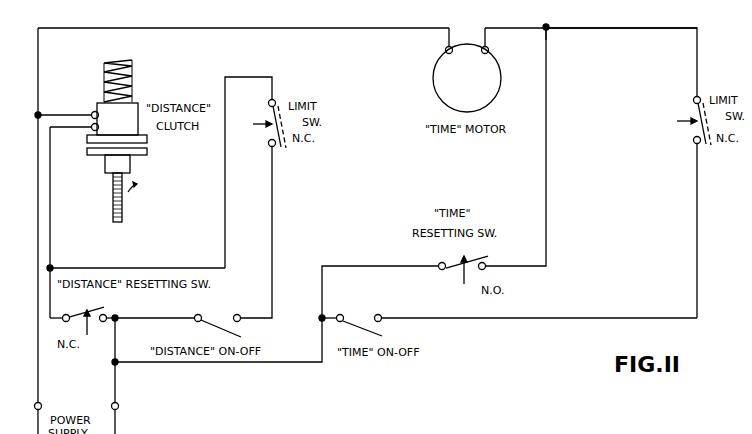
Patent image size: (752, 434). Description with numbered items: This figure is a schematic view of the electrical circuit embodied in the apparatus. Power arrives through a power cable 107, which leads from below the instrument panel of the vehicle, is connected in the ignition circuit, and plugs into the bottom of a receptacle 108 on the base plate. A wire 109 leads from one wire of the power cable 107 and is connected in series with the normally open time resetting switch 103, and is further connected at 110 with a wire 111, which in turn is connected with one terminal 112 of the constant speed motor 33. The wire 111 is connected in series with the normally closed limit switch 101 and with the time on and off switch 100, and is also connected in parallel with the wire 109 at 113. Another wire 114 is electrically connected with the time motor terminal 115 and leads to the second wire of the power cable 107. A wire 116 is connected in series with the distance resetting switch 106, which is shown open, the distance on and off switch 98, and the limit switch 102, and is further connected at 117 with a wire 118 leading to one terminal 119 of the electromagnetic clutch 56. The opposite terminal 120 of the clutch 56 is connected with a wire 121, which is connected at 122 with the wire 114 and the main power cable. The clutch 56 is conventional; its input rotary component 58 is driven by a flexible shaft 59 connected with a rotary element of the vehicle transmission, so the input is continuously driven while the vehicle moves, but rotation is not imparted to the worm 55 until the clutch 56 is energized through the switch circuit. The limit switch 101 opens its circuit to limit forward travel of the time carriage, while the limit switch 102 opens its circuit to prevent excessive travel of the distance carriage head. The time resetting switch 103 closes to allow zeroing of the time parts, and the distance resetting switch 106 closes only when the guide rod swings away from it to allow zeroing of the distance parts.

The constant speed electric motor 33 is at (434, 82).
The worm 55 is at (102, 82).
The electromagnetic clutch 56 is at (130, 125).
The input rotary component 58 is at (140, 152).
The flexible shaft 59 is at (124, 209).
The distance on and off switch 98 is at (220, 323).
The time on and off switch 100 is at (362, 326).
The limit switch 101 is at (694, 131).
The limit switch 102 is at (270, 135).
The time resetting switch 103 is at (460, 262).
The distance resetting switch 106 is at (62, 316).
The power cable 107 is at (113, 385).
The receptacle 108 is at (119, 405).
The wire 109 is at (230, 364).
The connection 110 is at (548, 30).
The wire 111 is at (610, 30).
The motor terminal 112 is at (489, 50).
The connection 113 is at (320, 316).
The wire 114 is at (336, 30).
The time motor terminal 115 is at (445, 50).
The wire 116 is at (226, 230).
The connection 117 is at (52, 268).
The wire 118 is at (52, 226).
The clutch terminal 119 is at (92, 130).
The clutch terminal 120 is at (93, 111).
The wire 121 is at (37, 111).
The connection 122 is at (36, 118).